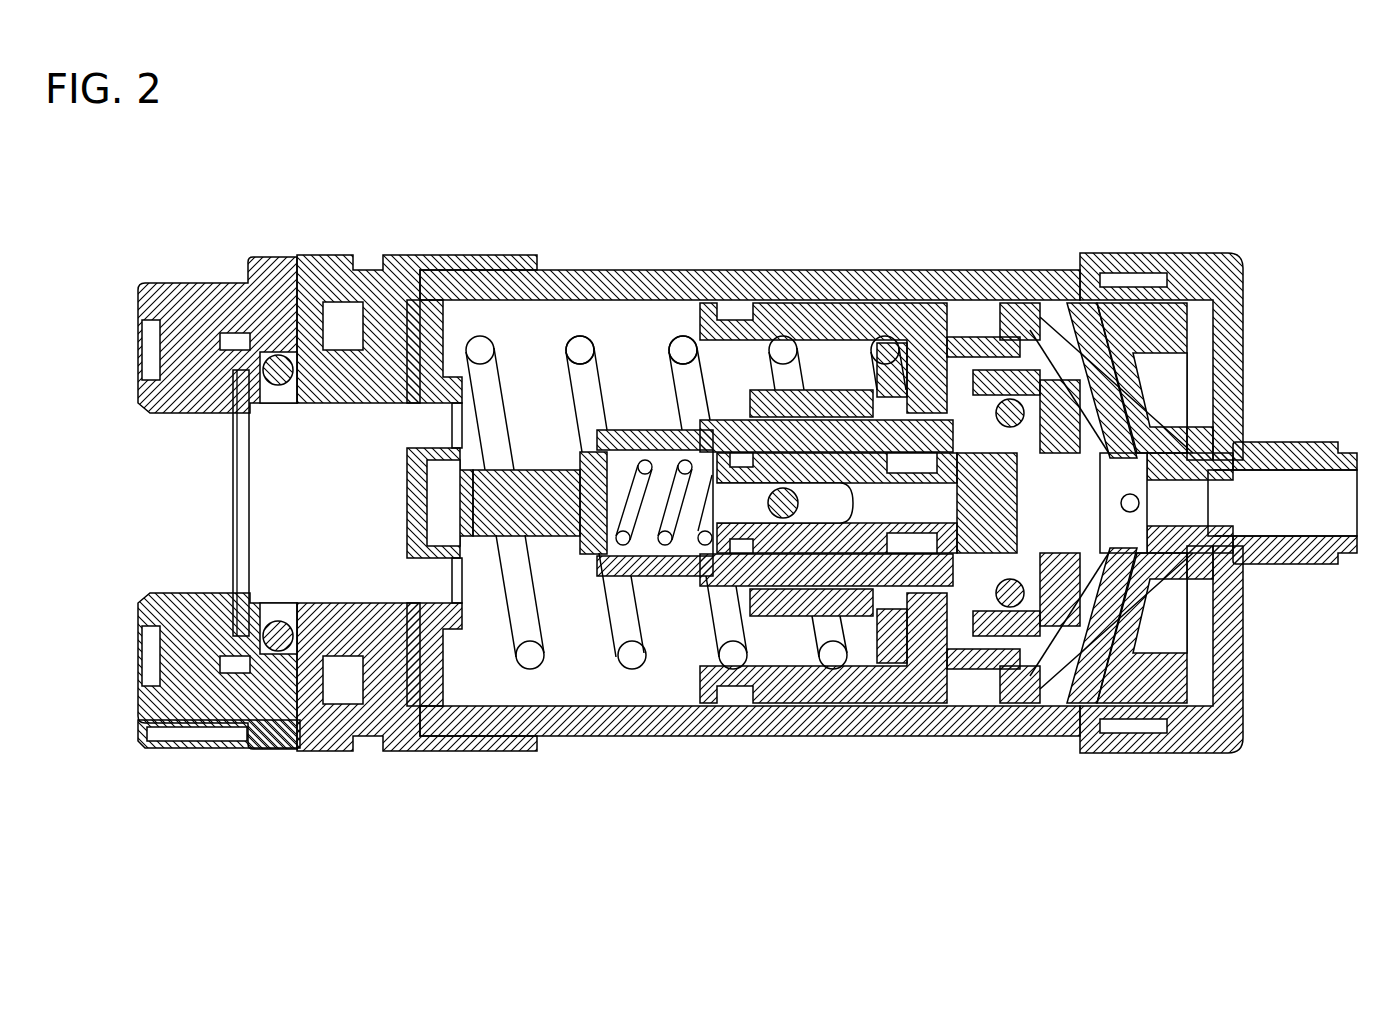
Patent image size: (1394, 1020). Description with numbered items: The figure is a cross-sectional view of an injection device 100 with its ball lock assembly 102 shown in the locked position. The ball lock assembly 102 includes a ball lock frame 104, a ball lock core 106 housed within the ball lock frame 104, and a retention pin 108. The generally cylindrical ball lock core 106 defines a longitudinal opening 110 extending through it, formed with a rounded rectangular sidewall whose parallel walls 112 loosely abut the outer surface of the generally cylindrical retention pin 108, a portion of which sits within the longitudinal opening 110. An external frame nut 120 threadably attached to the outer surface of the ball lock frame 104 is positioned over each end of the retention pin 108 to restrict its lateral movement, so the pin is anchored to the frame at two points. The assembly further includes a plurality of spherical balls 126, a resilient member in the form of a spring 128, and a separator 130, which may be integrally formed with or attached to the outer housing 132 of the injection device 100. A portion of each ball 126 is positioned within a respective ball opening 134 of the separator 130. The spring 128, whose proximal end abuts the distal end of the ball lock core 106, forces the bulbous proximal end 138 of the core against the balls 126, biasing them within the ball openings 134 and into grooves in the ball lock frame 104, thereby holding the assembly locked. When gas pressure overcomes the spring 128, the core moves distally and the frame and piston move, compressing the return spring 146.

The injection device 100 is at (816, 192).
The ball lock assembly 102 is at (940, 480).
The ball lock frame 104 is at (735, 430).
The ball lock core 106 is at (855, 572).
The retention pin 108 is at (745, 522).
The longitudinal opening 110 is at (860, 600).
The parallel walls 112 is at (700, 462).
The external frame nut 120 is at (823, 396).
The spherical balls 126 is at (1003, 400).
The spring 128 is at (640, 428).
The separator 130 is at (1087, 428).
The outer housing 132 is at (1113, 285).
The ball openings 134 is at (1115, 400).
The proximal end 138 is at (978, 558).
The return spring 146 is at (500, 465).